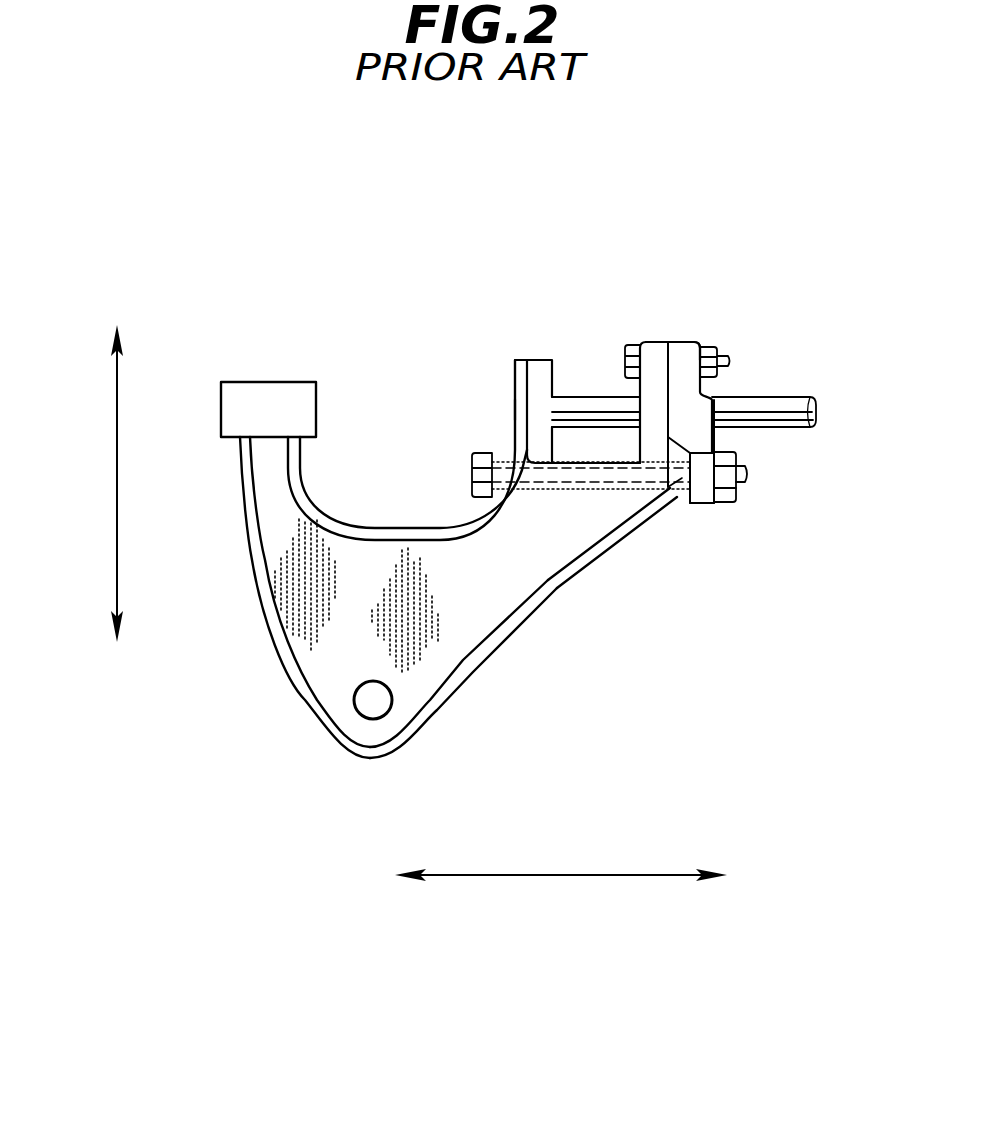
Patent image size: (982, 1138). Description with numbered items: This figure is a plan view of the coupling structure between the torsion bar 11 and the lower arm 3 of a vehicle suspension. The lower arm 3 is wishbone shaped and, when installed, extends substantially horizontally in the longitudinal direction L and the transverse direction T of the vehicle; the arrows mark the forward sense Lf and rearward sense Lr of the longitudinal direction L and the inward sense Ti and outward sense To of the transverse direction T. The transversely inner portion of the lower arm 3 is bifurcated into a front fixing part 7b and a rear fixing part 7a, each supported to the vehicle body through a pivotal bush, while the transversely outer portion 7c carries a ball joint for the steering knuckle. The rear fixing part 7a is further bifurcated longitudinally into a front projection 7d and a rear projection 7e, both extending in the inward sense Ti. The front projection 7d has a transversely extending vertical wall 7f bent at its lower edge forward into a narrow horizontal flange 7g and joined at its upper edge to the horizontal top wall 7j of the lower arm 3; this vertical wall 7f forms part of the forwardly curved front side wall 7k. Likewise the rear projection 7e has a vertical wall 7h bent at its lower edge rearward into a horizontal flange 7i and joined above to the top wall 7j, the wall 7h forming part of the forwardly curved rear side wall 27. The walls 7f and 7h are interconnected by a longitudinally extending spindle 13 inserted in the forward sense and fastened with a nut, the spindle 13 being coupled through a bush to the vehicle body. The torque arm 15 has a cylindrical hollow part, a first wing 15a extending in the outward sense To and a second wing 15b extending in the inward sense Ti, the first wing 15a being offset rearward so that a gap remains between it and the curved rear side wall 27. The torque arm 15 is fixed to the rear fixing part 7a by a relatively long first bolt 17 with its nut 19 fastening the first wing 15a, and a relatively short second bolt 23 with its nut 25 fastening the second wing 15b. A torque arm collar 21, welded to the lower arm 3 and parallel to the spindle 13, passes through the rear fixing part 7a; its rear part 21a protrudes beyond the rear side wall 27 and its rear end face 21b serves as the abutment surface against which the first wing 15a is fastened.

The lower arm 3 is at (403, 498).
The rear fixing part 7a is at (658, 345).
The front fixing part 7b is at (275, 378).
The transversely outer portion 7c is at (320, 737).
The front projection 7d is at (530, 357).
The rear projection 7e is at (664, 345).
The vertical wall 7f is at (515, 400).
The horizontal flange 7g is at (513, 437).
The vertical wall 7h is at (682, 507).
The horizontal flange 7i is at (735, 452).
The top wall 7j is at (450, 645).
The front side wall 7k is at (458, 522).
The torsion bar 11 is at (750, 402).
The spindle 13 is at (571, 388).
The torque arm 15 is at (718, 427).
The first wing 15a is at (697, 503).
The second wing 15b is at (685, 347).
The first bolt 17 is at (748, 480).
The nut 19 is at (732, 508).
The torque arm collar 21 is at (548, 505).
The rear part 21a is at (683, 497).
The rear end face 21b is at (712, 503).
The second bolt 23 is at (628, 347).
The nut 25 is at (713, 350).
The rear side wall 27 is at (678, 497).
The transverse direction T is at (117, 488).
The inward sense Ti is at (114, 337).
The outward sense To is at (117, 632).
The longitudinal direction L is at (597, 878).
The forward sense Lf is at (410, 879).
The rearward sense Lr is at (711, 879).